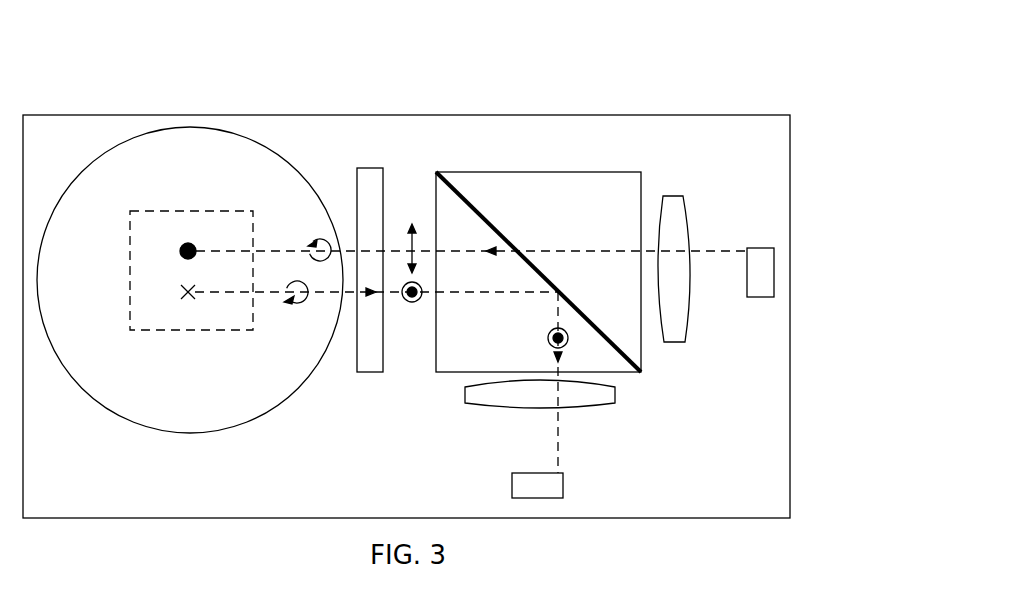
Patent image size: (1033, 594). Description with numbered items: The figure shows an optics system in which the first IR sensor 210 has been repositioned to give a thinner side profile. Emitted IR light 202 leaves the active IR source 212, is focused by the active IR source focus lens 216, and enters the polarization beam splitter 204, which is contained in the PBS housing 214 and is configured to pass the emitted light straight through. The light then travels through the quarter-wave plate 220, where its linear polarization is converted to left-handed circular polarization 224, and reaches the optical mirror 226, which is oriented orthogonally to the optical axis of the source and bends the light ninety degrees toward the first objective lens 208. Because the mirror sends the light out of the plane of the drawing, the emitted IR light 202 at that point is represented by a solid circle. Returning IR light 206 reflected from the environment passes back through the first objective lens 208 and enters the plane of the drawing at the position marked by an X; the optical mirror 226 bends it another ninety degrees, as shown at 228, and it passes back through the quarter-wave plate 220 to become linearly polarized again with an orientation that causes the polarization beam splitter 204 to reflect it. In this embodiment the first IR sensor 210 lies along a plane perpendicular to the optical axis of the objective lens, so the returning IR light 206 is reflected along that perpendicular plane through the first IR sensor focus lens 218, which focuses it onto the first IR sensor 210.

The emitted IR light 202 is at (188, 243).
The polarization beam splitter 204 is at (478, 207).
The returning IR light 206 is at (185, 296).
The first objective lens 208 is at (165, 127).
The first IR sensor 210 is at (512, 476).
The active IR source 212 is at (763, 248).
The PBS housing 214 is at (607, 171).
The active IR source focus lens 216 is at (414, 225).
The first IR sensor focus lens 218 is at (494, 410).
The quarter-wave plate 220 is at (370, 372).
The left-handed circular polarization 224 is at (325, 235).
The optical mirror 226 is at (135, 211).
The bent returning light polarization 228 is at (290, 303).